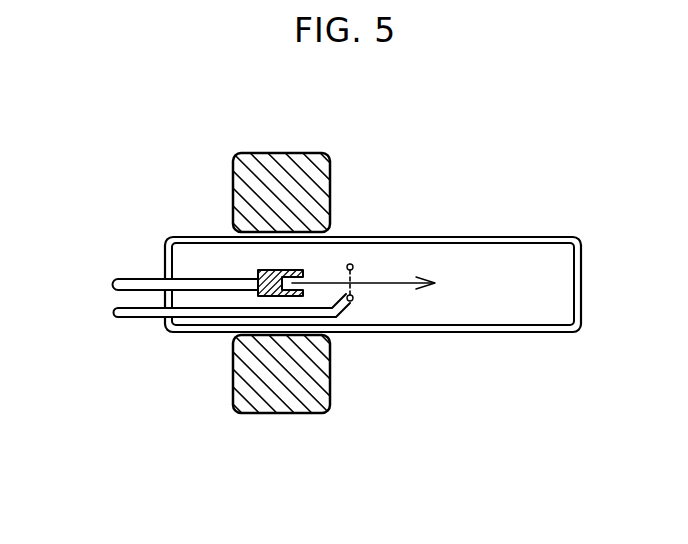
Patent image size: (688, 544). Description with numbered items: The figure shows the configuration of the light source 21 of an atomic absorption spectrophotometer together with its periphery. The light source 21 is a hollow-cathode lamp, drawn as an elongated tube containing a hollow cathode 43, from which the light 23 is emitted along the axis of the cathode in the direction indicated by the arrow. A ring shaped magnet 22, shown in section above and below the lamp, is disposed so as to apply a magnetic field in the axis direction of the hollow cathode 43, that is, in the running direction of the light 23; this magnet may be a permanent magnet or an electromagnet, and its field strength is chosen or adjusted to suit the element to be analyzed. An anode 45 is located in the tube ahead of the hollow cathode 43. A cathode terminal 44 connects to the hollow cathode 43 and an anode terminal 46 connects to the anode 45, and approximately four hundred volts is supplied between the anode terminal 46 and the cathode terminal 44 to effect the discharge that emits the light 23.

The light source 21 is at (490, 236).
The ring shaped magnet 22 is at (294, 152).
The light 23 is at (393, 282).
The hollow cathode 43 is at (303, 270).
The cathode terminal 44 is at (118, 290).
The anode 45 is at (352, 264).
The anode terminal 46 is at (118, 317).